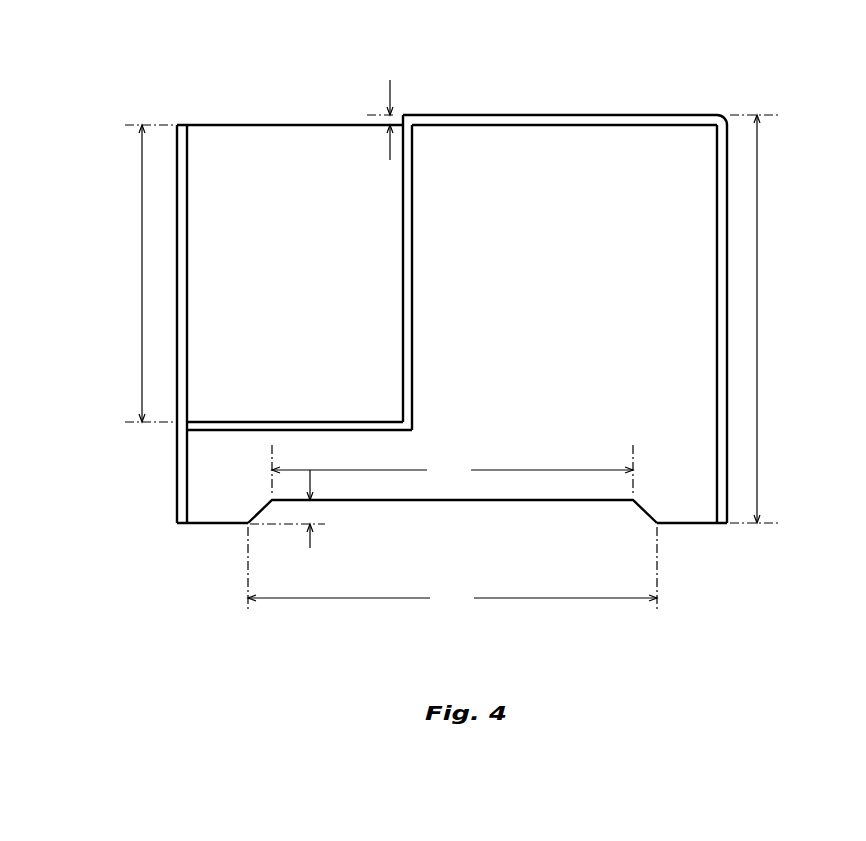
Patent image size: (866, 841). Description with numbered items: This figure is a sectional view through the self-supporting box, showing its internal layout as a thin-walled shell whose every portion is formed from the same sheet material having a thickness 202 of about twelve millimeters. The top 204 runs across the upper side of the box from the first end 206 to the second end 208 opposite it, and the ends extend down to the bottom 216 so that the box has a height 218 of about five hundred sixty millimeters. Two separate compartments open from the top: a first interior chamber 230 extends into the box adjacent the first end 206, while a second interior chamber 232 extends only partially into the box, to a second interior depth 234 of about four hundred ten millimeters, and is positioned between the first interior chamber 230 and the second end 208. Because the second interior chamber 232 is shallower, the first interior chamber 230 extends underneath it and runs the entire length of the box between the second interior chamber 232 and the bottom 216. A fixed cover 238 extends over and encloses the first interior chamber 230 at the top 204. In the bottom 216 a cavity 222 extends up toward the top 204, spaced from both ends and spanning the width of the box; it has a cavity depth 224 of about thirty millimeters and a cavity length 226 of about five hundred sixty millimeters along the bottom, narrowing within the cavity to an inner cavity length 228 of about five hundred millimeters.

The thickness 202 is at (391, 92).
The top 204 is at (182, 123).
The first end 206 is at (727, 217).
The second end 208 is at (177, 195).
The bottom 216 is at (210, 524).
The height 218 is at (757, 393).
The cavity 222 is at (517, 510).
The cavity depth 224 is at (313, 538).
The cavity length 226 is at (340, 600).
The inner cavity length 228 is at (582, 468).
The first interior chamber 230 is at (547, 147).
The second interior chamber 232 is at (297, 143).
The second interior depth 234 is at (142, 355).
The fixed cover 238 is at (480, 120).